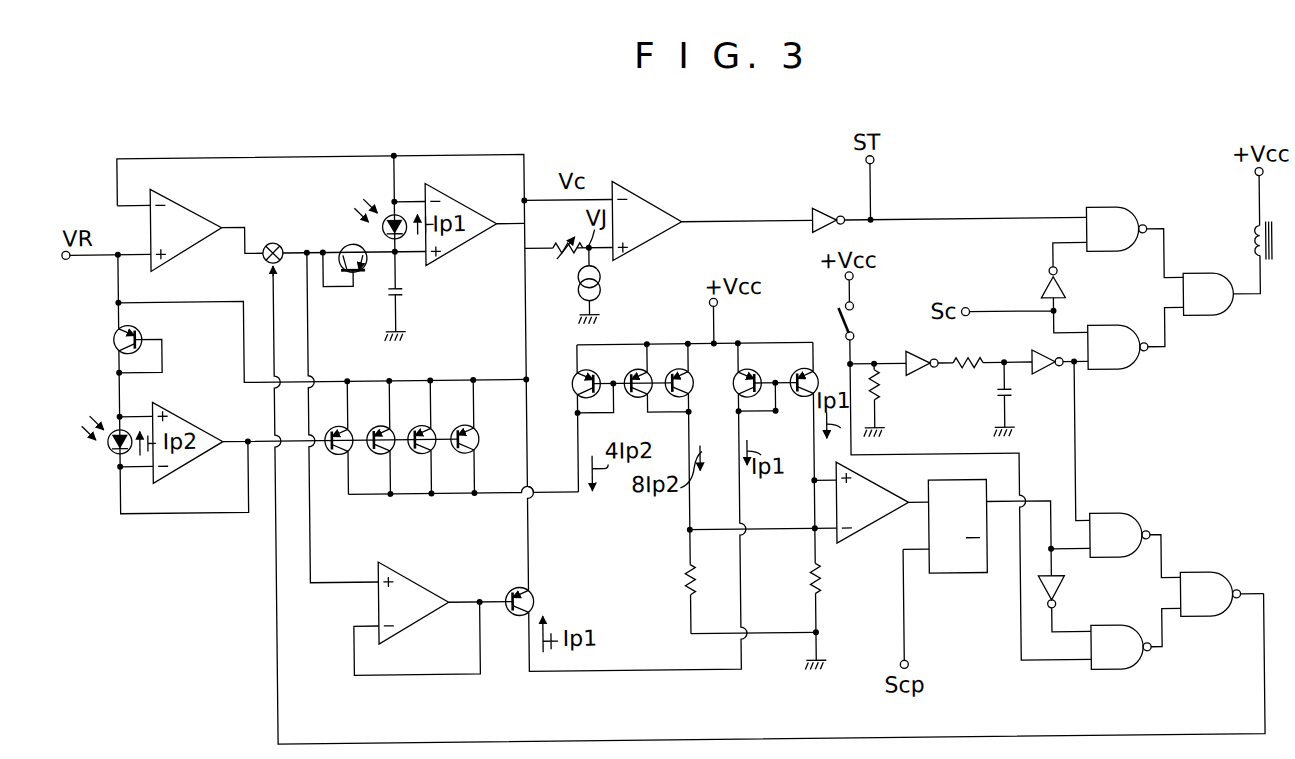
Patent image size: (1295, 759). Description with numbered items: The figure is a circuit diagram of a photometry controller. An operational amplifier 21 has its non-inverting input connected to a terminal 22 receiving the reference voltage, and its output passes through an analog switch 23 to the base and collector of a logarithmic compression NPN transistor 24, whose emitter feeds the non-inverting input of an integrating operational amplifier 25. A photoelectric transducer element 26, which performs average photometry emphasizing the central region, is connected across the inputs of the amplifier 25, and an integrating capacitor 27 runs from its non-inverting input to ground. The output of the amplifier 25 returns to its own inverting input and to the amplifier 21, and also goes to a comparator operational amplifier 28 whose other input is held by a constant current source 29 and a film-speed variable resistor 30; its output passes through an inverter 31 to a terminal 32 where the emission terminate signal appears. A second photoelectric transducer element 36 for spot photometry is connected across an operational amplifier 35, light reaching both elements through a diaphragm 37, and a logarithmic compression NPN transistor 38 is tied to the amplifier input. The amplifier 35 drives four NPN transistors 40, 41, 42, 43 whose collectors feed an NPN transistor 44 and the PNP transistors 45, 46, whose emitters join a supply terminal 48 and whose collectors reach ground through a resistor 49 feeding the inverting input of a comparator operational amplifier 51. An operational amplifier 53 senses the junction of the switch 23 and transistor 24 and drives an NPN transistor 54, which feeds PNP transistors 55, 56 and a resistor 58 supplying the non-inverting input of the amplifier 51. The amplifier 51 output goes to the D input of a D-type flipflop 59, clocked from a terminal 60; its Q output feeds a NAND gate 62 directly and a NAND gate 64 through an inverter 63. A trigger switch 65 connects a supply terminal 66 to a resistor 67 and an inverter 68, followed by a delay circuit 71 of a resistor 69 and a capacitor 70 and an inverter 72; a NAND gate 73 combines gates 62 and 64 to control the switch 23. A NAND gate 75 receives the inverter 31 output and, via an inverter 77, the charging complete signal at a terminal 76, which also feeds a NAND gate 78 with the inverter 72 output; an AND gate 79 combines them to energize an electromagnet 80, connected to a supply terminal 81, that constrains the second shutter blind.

The operational amplifier 21 is at (182, 216).
The terminal 22 is at (70, 254).
The analog switch 23 is at (275, 239).
The NPN transistor 24 is at (346, 247).
The integrating operational amplifier 25 is at (464, 196).
The photoelectric transducer element 26 is at (394, 206).
The integrating capacitor 27 is at (405, 290).
The comparator operational amplifier 28 is at (650, 210).
The constant current source 29 is at (603, 288).
The variable resistor 30 is at (560, 260).
The inverter 31 is at (822, 208).
The terminal 32 is at (878, 162).
The operational amplifier 35 is at (194, 416).
The photoelectric transducer element 36 is at (126, 424).
The diaphragm 37 is at (362, 207).
The NPN transistor 38 is at (113, 332).
The NPN transistor 40 is at (338, 424).
The NPN transistor 41 is at (380, 424).
The NPN transistor 42 is at (421, 424).
The NPN transistor 43 is at (464, 424).
The NPN transistor 44 is at (572, 386).
The PNP transistor 45 is at (632, 372).
The PNP transistor 46 is at (694, 386).
The terminal 48 is at (711, 304).
The resistor 49 is at (682, 578).
The operational amplifier 51 is at (876, 488).
The operational amplifier 53 is at (402, 574).
The NPN transistor 54 is at (532, 594).
The PNP transistor 55 is at (748, 372).
The PNP transistor 56 is at (808, 398).
The resistor 58 is at (807, 578).
The D-type flipflop 59 is at (970, 576).
The terminal 60 is at (906, 665).
The NAND gate 62 is at (1110, 520).
The inverter 63 is at (1062, 596).
The NAND gate 64 is at (1110, 666).
The trigger switch 65 is at (855, 317).
The terminal 66 is at (847, 278).
The resistor 67 is at (881, 392).
The inverter 68 is at (914, 355).
The resistor 69 is at (969, 362).
The capacitor 70 is at (996, 397).
The delay circuit 71 is at (937, 405).
The inverter 72 is at (1040, 374).
The NAND gate 73 is at (1206, 584).
The NAND gate 75 is at (1114, 217).
The terminal 76 is at (967, 311).
The inverter 77 is at (1066, 284).
The NAND gate 78 is at (1102, 372).
The AND gate 79 is at (1201, 320).
The electromagnet 80 is at (1254, 241).
The terminal 81 is at (1258, 178).